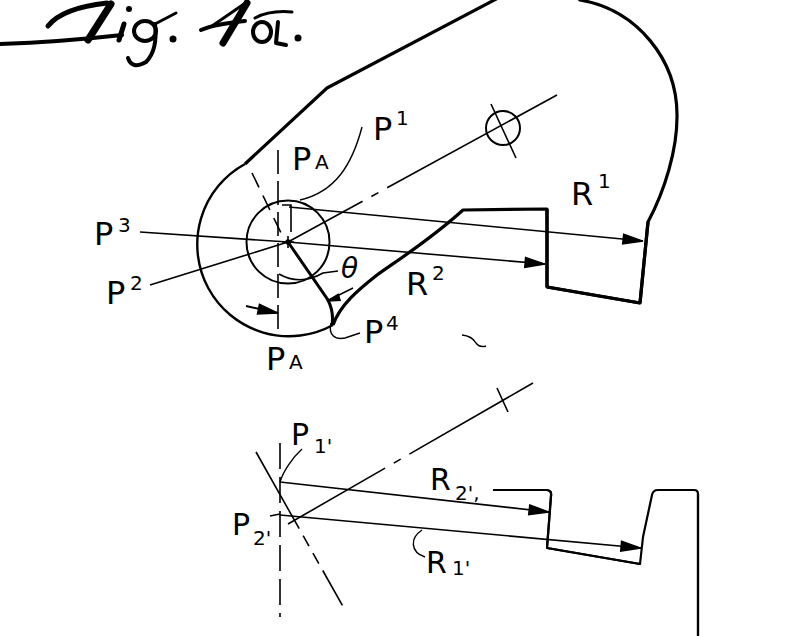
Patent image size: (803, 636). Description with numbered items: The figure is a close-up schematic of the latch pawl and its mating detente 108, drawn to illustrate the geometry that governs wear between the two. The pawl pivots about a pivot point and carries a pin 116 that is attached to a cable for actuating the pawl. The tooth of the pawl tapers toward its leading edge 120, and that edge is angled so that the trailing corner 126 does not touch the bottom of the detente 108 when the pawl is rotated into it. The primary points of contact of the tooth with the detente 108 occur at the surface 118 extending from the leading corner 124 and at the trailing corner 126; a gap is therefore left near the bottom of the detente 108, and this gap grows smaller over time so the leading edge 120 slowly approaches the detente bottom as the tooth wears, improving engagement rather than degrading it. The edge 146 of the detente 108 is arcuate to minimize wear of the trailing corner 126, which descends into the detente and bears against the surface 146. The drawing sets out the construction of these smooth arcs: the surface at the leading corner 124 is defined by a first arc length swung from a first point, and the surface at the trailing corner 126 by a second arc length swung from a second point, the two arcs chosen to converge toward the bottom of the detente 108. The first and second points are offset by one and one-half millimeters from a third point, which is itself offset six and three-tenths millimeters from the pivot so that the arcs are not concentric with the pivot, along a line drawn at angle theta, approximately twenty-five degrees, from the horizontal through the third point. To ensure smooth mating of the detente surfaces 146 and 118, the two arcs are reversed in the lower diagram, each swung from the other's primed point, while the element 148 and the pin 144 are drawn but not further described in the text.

The pivot pin 144 is at (262, 222).
The pin 116 is at (516, 112).
The trailing corner 126 is at (545, 280).
The leading corner 124 is at (645, 287).
The leading edge 120 is at (586, 297).
The detente 108 is at (605, 524).
The tooth 148 is at (493, 494).
The edge of the detente 146 is at (543, 542).
The surface 118 is at (643, 537).